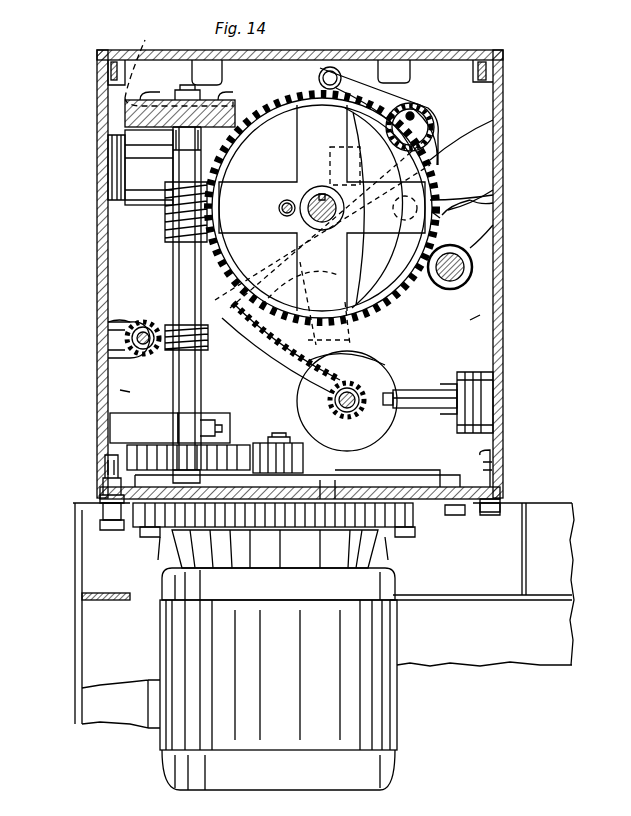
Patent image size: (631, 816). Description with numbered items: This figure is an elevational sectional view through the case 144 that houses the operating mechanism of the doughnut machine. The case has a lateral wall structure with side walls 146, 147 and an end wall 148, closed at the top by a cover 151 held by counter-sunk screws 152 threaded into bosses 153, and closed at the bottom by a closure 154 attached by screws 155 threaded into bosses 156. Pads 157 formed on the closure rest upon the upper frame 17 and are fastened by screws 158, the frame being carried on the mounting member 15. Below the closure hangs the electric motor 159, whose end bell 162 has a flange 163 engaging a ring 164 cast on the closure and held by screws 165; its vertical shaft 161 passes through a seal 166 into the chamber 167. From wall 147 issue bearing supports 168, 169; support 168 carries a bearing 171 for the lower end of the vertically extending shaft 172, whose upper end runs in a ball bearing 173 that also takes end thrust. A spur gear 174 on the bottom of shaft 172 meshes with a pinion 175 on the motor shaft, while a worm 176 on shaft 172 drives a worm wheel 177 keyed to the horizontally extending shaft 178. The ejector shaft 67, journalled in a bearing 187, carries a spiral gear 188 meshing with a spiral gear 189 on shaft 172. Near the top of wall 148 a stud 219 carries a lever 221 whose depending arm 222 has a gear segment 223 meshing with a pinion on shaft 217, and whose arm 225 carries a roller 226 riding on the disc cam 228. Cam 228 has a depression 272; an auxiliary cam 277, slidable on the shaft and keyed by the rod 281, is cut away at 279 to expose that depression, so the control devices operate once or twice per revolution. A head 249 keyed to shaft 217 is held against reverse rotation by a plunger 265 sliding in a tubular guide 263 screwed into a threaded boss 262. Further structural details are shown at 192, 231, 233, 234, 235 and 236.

The mounting bracket 15 is at (75, 715).
The upper frame 17 is at (80, 580).
The ejector shaft 67 is at (143, 330).
The case 144 is at (497, 348).
The side wall 146 is at (497, 238).
The side wall 147 is at (98, 281).
The end wall 148 is at (490, 198).
The cover 151 is at (440, 52).
The counter-sunk screws 152 is at (112, 52).
The bosses 153 is at (205, 68).
The closure 154 is at (450, 490).
The screws 155 is at (500, 493).
The bosses 156 is at (490, 470).
The pads 157 is at (500, 505).
The screws 158 is at (470, 512).
The electric motor 159 is at (355, 718).
The vertical shaft 161 is at (195, 580).
The end bell 162 is at (390, 575).
The flange 163 is at (402, 538).
The ring 164 is at (418, 503).
The screws 165 is at (440, 515).
The seal 166 is at (185, 560).
The chamber 167 is at (470, 318).
The bearing support 168 is at (135, 418).
The bearing support 169 is at (118, 112).
The bearing 171 is at (215, 418).
The vertically extending shaft 172 is at (182, 258).
The ball bearing 173 is at (179, 62).
The spur gear 174 is at (140, 455).
The pinion 175 is at (270, 456).
The worm 176 is at (165, 222).
The worm wheel 177 is at (445, 198).
The horizontally extending shaft 178 is at (312, 196).
The bearing 187 is at (115, 350).
The spiral gear 188 is at (130, 322).
The spiral gear 189 is at (204, 340).
The bearing boss 192 is at (450, 270).
The shaft 217 is at (355, 398).
The stud 219 is at (488, 96).
The lever 221 is at (442, 160).
The depending arm 222 is at (260, 290).
The gear segment 223 is at (275, 343).
The arm 225 is at (362, 85).
The roller 226 is at (318, 75).
The disc cam 228 is at (390, 260).
The worm drive cylinder 231 is at (140, 163).
The shaft bearing 233 is at (210, 142).
The cam 234 is at (340, 152).
The idler gear 235 is at (437, 145).
The gear tooth 236 is at (435, 215).
The head 249 is at (362, 432).
The threaded boss 262 is at (490, 397).
The tubular guide 263 is at (428, 393).
The plunger 265 is at (397, 408).
The depression 272 is at (372, 292).
The auxiliary cam 277 is at (237, 278).
The cut away portion 279 is at (352, 118).
The rod 281 is at (280, 213).